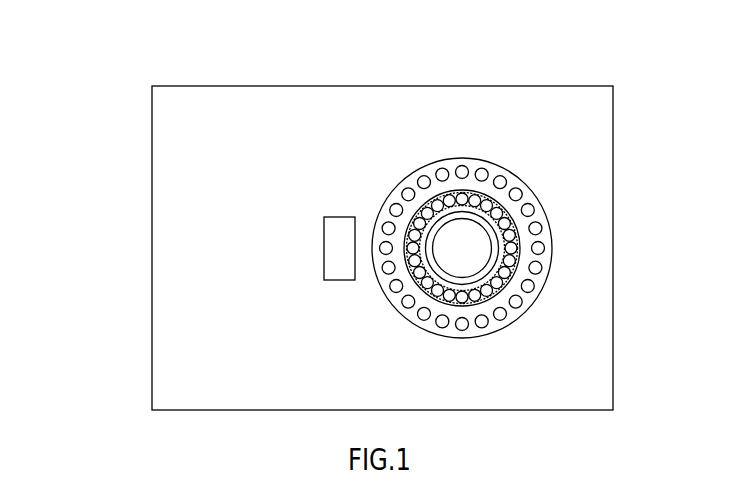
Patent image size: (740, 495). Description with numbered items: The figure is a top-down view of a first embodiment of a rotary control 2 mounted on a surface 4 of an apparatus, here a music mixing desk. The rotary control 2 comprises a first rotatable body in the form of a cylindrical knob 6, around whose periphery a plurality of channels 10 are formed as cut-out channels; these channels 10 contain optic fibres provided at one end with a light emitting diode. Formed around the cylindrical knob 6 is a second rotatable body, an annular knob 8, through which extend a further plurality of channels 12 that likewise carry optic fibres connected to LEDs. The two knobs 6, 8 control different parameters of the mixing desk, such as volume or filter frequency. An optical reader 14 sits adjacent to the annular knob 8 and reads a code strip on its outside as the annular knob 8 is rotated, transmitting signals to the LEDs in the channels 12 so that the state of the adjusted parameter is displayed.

The rotary control 2 is at (408, 63).
The surface 4 is at (331, 248).
The cylindrical knob 6 is at (517, 157).
The annular knob 8 is at (521, 269).
The channels 10 is at (384, 320).
The channels 12 is at (532, 248).
The optical reader 14 is at (251, 154).